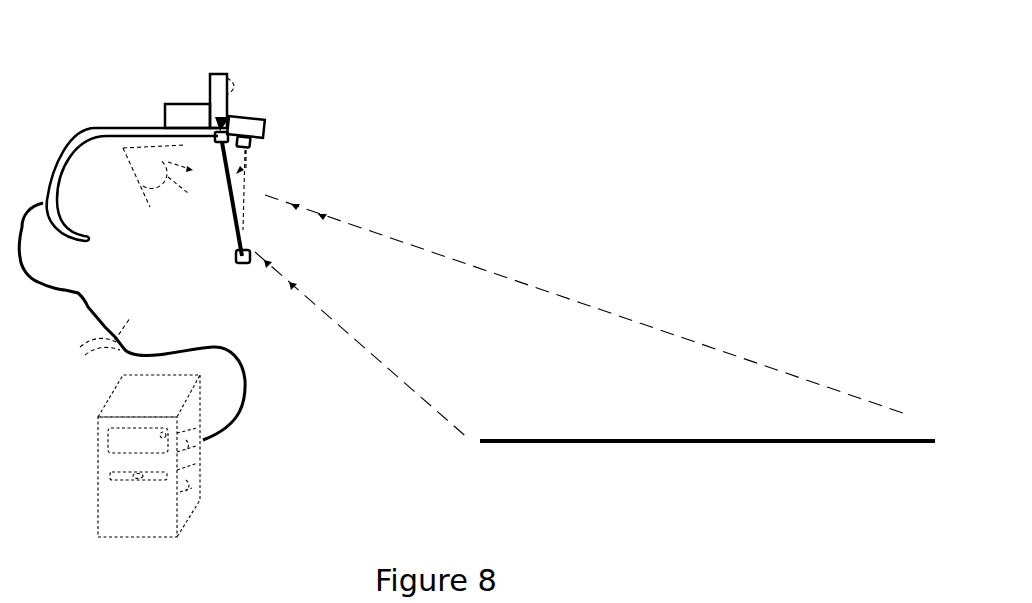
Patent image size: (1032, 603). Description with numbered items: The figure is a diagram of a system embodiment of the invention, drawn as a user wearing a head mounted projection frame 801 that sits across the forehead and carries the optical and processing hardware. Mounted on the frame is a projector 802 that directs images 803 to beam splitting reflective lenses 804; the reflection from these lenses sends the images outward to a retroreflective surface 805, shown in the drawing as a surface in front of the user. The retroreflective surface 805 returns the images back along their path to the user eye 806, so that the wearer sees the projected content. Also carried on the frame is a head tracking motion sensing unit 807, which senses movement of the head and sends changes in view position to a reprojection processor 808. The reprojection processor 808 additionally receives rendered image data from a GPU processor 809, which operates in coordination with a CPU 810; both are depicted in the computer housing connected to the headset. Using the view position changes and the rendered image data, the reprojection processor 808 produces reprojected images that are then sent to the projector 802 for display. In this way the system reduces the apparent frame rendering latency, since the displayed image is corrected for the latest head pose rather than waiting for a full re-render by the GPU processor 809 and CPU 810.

The head mounted projection frame 801 is at (79, 120).
The projector 802 is at (255, 117).
The images 803 is at (246, 168).
The beam splitting reflective lenses 804 is at (246, 217).
The retroreflective surface 805 is at (712, 440).
The user eye 806 is at (161, 202).
The head tracking motion sensing unit 807 is at (222, 83).
The reprojection processor 808 is at (170, 114).
The GPU processor 809 is at (200, 460).
The CPU 810 is at (190, 487).